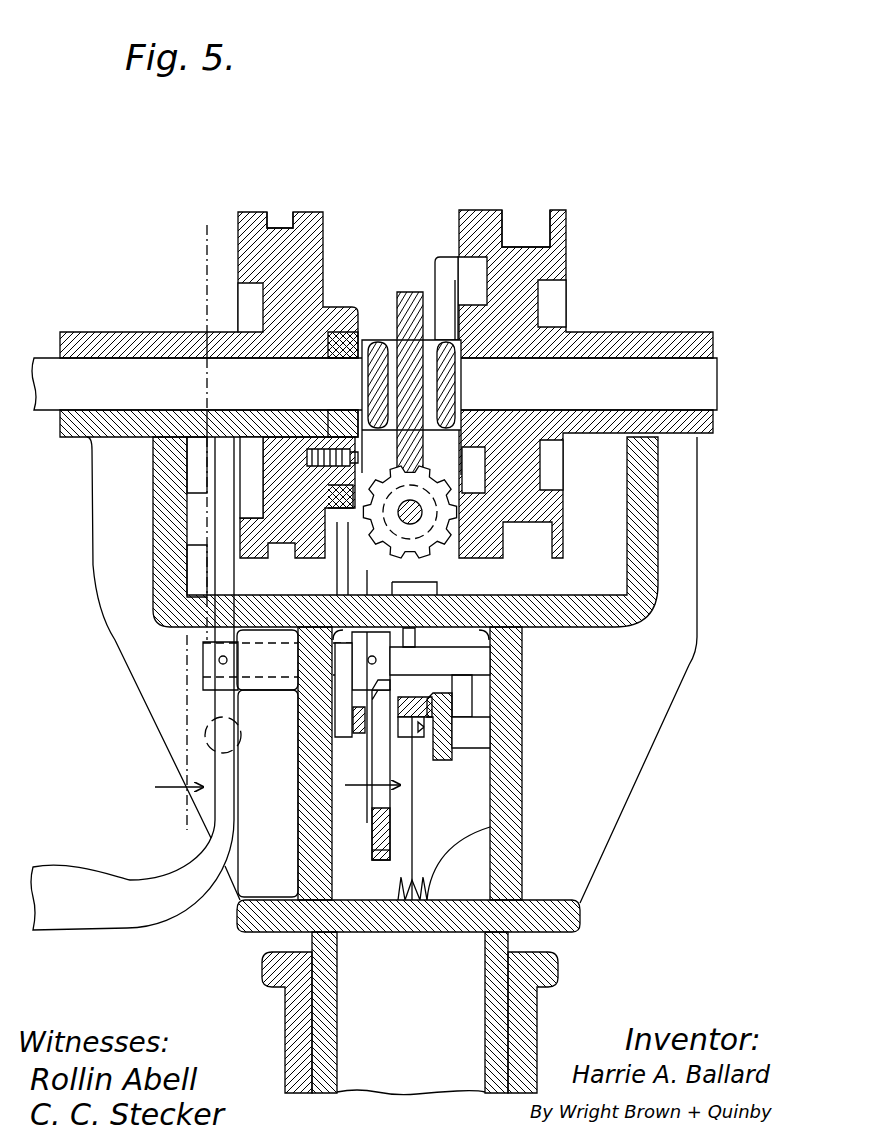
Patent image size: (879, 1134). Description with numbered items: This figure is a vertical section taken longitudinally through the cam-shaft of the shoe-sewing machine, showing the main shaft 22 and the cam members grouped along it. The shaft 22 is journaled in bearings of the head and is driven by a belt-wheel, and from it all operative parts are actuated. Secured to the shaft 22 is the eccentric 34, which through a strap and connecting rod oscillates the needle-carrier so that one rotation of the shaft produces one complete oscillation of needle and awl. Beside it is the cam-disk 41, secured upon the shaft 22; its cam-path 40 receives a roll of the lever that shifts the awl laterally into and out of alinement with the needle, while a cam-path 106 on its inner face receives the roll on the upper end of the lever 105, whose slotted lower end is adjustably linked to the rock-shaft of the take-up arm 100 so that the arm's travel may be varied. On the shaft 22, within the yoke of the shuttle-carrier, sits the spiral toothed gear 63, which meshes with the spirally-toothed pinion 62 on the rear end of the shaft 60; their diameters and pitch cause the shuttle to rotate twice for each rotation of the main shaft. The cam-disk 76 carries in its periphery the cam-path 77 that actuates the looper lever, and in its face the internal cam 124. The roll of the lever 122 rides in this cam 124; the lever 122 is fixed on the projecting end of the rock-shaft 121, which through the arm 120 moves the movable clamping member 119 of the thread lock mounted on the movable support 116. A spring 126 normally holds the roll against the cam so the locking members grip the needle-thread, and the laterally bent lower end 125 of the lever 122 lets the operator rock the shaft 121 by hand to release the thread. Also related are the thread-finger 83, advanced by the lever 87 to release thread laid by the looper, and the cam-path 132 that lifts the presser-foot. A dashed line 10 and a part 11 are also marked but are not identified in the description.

The axis line 10 is at (196, 529).
The pawl arm 11 is at (353, 823).
The main shaft 22 is at (698, 380).
The eccentric 34 is at (347, 347).
The cam-path 40 is at (512, 227).
The cam-disk 41 is at (552, 260).
The shaft 60 is at (413, 510).
The spirally-toothed pinion 62 is at (437, 560).
The spiral toothed gear 63 is at (405, 310).
The cam-disk 76 is at (303, 263).
The cam-path 77 is at (279, 211).
The thread-finger 83 is at (360, 733).
The lever 87 is at (340, 578).
The take-up arm 100 is at (372, 853).
The lever 105 is at (442, 280).
The cam-path 106 is at (465, 272).
The movable support 116 is at (453, 752).
The movable clamping member 119 is at (413, 720).
The arm 120 is at (378, 708).
The rock-shaft 121 is at (470, 660).
The lever 122 is at (227, 602).
The internal cam 124 is at (243, 287).
The laterally bent lower end 125 is at (58, 880).
The spring 126 is at (207, 737).
The cam-path 132 is at (550, 303).